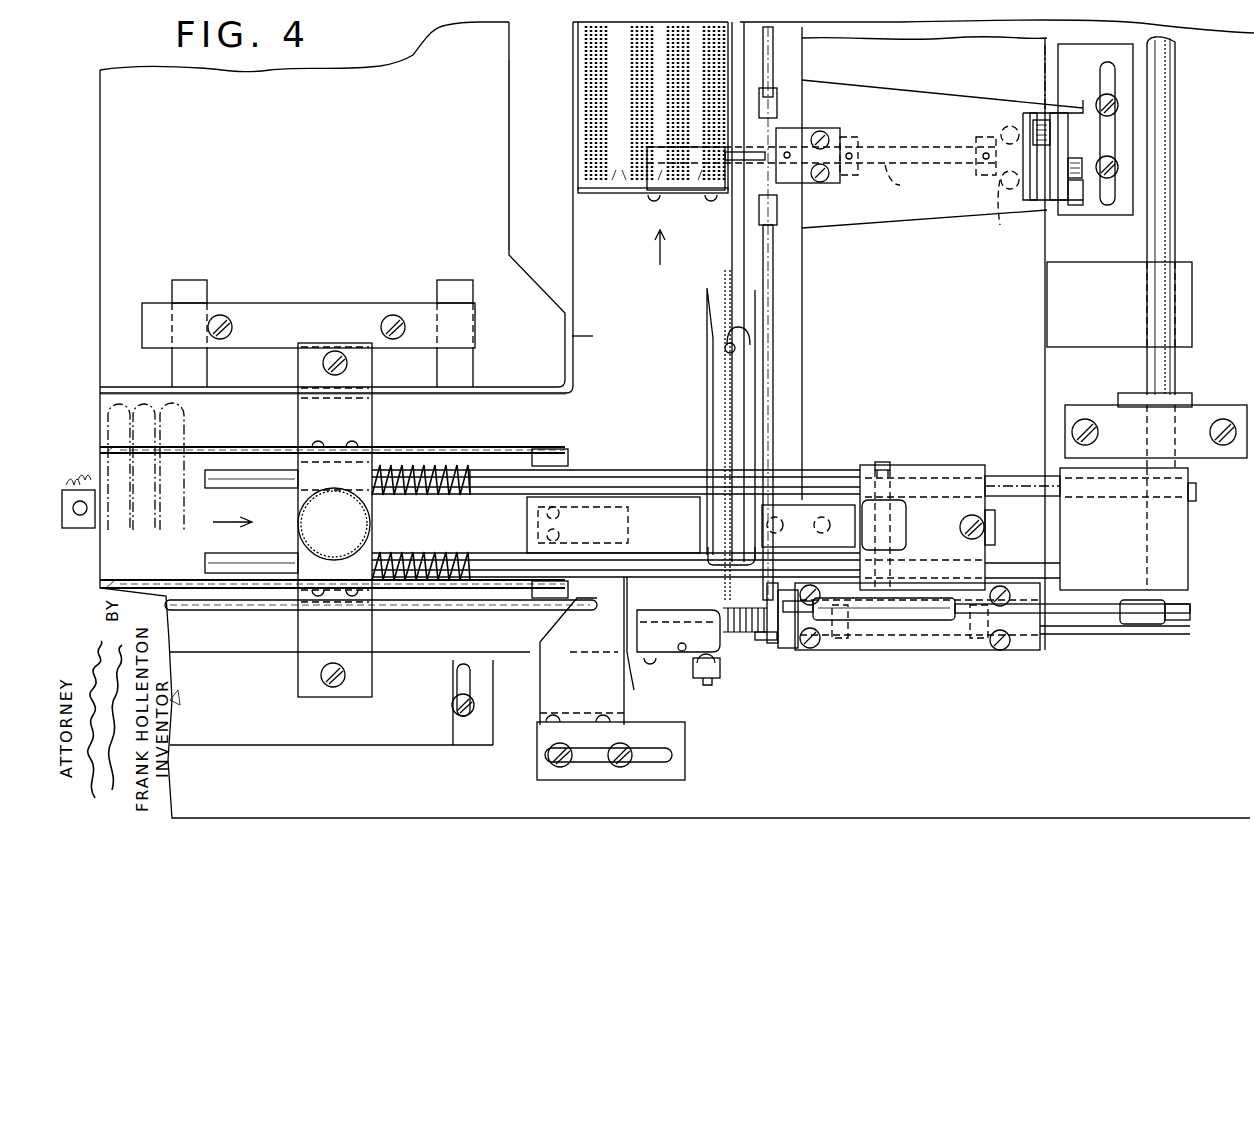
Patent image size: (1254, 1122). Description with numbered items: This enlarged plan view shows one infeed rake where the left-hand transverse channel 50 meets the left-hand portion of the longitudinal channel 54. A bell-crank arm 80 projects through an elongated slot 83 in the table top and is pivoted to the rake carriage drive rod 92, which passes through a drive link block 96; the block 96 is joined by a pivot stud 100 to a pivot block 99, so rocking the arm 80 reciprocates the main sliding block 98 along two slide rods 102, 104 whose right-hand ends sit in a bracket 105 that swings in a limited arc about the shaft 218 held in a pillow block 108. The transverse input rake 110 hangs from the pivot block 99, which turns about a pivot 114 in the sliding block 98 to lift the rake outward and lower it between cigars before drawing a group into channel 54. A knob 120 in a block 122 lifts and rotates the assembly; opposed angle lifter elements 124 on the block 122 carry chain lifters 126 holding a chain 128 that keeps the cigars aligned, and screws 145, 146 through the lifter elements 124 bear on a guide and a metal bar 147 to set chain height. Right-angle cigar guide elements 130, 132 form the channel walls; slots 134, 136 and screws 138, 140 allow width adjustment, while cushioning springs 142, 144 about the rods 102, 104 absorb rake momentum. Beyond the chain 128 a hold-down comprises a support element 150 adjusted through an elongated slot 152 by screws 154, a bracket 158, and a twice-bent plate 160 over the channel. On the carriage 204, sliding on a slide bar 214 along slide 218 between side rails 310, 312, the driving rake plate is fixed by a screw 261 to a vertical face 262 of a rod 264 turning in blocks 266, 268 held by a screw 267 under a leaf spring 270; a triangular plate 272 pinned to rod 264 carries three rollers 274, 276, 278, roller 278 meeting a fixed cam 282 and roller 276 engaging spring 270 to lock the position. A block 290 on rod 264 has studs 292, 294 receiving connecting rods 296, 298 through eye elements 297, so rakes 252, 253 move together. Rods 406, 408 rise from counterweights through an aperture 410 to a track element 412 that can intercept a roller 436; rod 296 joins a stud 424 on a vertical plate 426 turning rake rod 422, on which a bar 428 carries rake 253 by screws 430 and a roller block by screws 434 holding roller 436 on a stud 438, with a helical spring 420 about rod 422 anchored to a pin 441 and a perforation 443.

The left-hand transverse channel 50 is at (246, 408).
The left-hand portion of the longitudinal channel 54 is at (572, 340).
The bell crank arm 80 is at (1133, 635).
The elongated slot 83 is at (1066, 636).
The rake carriage drive rod 92 is at (1031, 652).
The drive link block 96 is at (910, 620).
The main sliding block 98 is at (956, 478).
The pivot block 99 is at (898, 508).
The pivot stud 100 is at (873, 620).
The slide rod 102 is at (1006, 477).
The slide rod 104 is at (1008, 562).
The bracket 105 is at (1188, 522).
The pillow block 108 is at (1203, 412).
The transverse input rake 110 is at (690, 497).
The pivot 114 is at (878, 462).
The knob 120 is at (360, 520).
The block 122 is at (298, 498).
The angle lifter elements 124 is at (328, 450).
The chain lifter 126 is at (528, 450).
The chain 128 is at (426, 462).
The right angle cigar guide element 130 is at (488, 394).
The right angle cigar guide element 132 is at (410, 652).
The slot 134 is at (172, 730).
The slot 136 is at (460, 745).
The screw 138 is at (180, 695).
The screw 140 is at (452, 708).
The cushioning spring 142 is at (455, 562).
The cushioning spring 144 is at (462, 493).
The screw 145 is at (338, 350).
The screw 146 is at (333, 688).
The metal bar 147 is at (266, 315).
The right-angle support element 150 is at (678, 782).
The elongated slot 152 is at (653, 765).
The screws 154 is at (614, 768).
The hold down support bracket 158 is at (540, 690).
The plate 160 is at (638, 507).
The carriage 204 is at (1045, 388).
The slide bar 214 is at (1178, 268).
The slide 218 is at (1150, 150).
The rake 252 is at (598, 195).
The rake 253 is at (638, 690).
The screw 261 is at (648, 200).
The vertical face 262 is at (668, 196).
The rod 264 is at (911, 181).
The block 266 is at (848, 138).
The screw 267 is at (1004, 216).
The block 268 is at (996, 128).
The leaf spring 270 is at (923, 100).
The plate 272 is at (1060, 120).
The roller 274 is at (1040, 125).
The roller 276 is at (1082, 168).
The roller 278 is at (1076, 205).
The fixed cam 282 is at (1046, 66).
The block 290 is at (790, 132).
The stud 292 is at (755, 160).
The stud 294 is at (764, 144).
The connecting rod 296 is at (773, 406).
The eye element 297 is at (773, 200).
The connecting rod 298 is at (773, 68).
The side rail 310 is at (573, 133).
The side rail 312 is at (732, 267).
The rod 406 is at (745, 540).
The rod 408 is at (736, 348).
The elongated aperture 410 is at (748, 335).
The track element 412 is at (707, 355).
The helical spring 420 is at (770, 643).
The rake rod 422 is at (955, 640).
The stud 424 is at (746, 608).
The vertical plate 426 is at (790, 648).
The bar 428 is at (698, 592).
The screws 430 is at (648, 653).
The screws 434 is at (714, 672).
The roller 436 is at (712, 686).
The stud 438 is at (700, 678).
The pin 441 is at (765, 640).
The perforation 443 is at (680, 652).